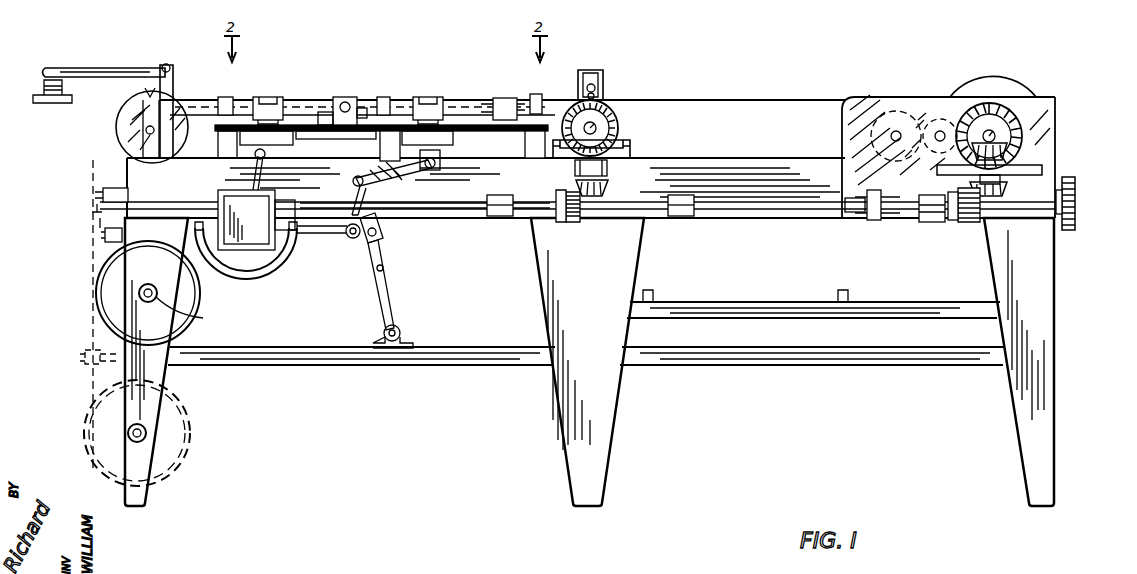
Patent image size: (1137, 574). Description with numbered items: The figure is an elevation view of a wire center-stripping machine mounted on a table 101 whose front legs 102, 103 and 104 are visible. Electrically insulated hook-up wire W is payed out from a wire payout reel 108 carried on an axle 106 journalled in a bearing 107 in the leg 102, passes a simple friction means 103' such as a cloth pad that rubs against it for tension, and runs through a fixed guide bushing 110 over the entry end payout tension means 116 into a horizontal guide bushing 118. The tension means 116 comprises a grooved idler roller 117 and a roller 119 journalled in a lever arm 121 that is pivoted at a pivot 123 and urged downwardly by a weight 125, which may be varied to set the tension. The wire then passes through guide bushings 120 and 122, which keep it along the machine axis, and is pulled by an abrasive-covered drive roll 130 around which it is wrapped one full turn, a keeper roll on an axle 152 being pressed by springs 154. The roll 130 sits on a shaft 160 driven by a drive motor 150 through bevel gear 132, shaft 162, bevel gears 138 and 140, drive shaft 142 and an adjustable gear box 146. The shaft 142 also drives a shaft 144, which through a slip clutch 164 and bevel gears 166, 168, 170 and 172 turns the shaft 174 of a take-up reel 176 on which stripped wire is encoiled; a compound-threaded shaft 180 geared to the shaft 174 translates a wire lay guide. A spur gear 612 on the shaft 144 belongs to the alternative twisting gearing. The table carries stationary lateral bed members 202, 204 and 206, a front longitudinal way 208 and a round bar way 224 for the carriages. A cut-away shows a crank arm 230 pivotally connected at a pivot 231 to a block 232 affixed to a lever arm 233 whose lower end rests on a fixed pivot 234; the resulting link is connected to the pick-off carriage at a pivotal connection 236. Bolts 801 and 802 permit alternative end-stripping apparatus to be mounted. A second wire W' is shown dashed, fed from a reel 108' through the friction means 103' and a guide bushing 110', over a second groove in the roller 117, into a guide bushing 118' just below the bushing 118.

The table 101 is at (590, 232).
The front leg 102 is at (145, 497).
The front leg 103 is at (588, 362).
The front leg 104 is at (1045, 438).
The friction means 103' is at (76, 296).
The axle 106 is at (156, 289).
The bearing 107 is at (193, 311).
The wire payout reel 108 is at (129, 293).
The reel 108' is at (157, 433).
The fixed guide bushing 110 is at (94, 190).
The guide bushing 110' is at (73, 209).
The entry end payout tension means 116 is at (99, 95).
The idler roller 117 is at (152, 127).
The horizontal guide bushing 118 is at (238, 101).
The guide bushing 118' is at (241, 127).
The roller 119 is at (146, 87).
The guide bushing 120 is at (382, 95).
The lever arm 121 is at (76, 67).
The guide bushing 122 is at (533, 93).
The pivot 123 is at (172, 66).
The weight 125 is at (45, 90).
The abrasive-covered drive roll 130 is at (616, 116).
The bevel gear 132 is at (616, 128).
The bevel gear 138 is at (600, 208).
The bevel gear 140 is at (564, 212).
The drive shaft 142 is at (458, 220).
The shaft 144 is at (792, 218).
The adjustable gear box 146 is at (256, 199).
The drive motor 150 is at (272, 263).
The axle 152 is at (600, 92).
The springs 154 is at (598, 80).
The shaft 160 is at (598, 122).
The shaft 162 is at (610, 186).
The slip clutch 164 is at (870, 225).
The bevel gear 166 is at (968, 225).
The bevel gear 168 is at (1020, 185).
The bevel gear 170 is at (1020, 150).
The bevel gear 172 is at (1020, 128).
The shaft 174 is at (1003, 125).
The take-up reel 176 is at (1005, 80).
The shaft 180 is at (896, 133).
The lateral bed member 202 is at (220, 152).
The lateral bed member 204 is at (380, 150).
The lateral bed member 206 is at (527, 150).
The longitudinal way 208 is at (303, 92).
The round bar 224 is at (336, 142).
The crank arm 230 is at (318, 240).
The pivot 231 is at (360, 240).
The block 232 is at (380, 229).
The lever arm 233 is at (388, 281).
The fixed pivot 234 is at (398, 330).
The pivotal connection 236 is at (432, 170).
The spur gear 612 is at (1078, 198).
The bolt 801 is at (574, 172).
The bolt 802 is at (628, 148).
The hook-up wire W is at (425, 269).
The second wire W' is at (82, 306).